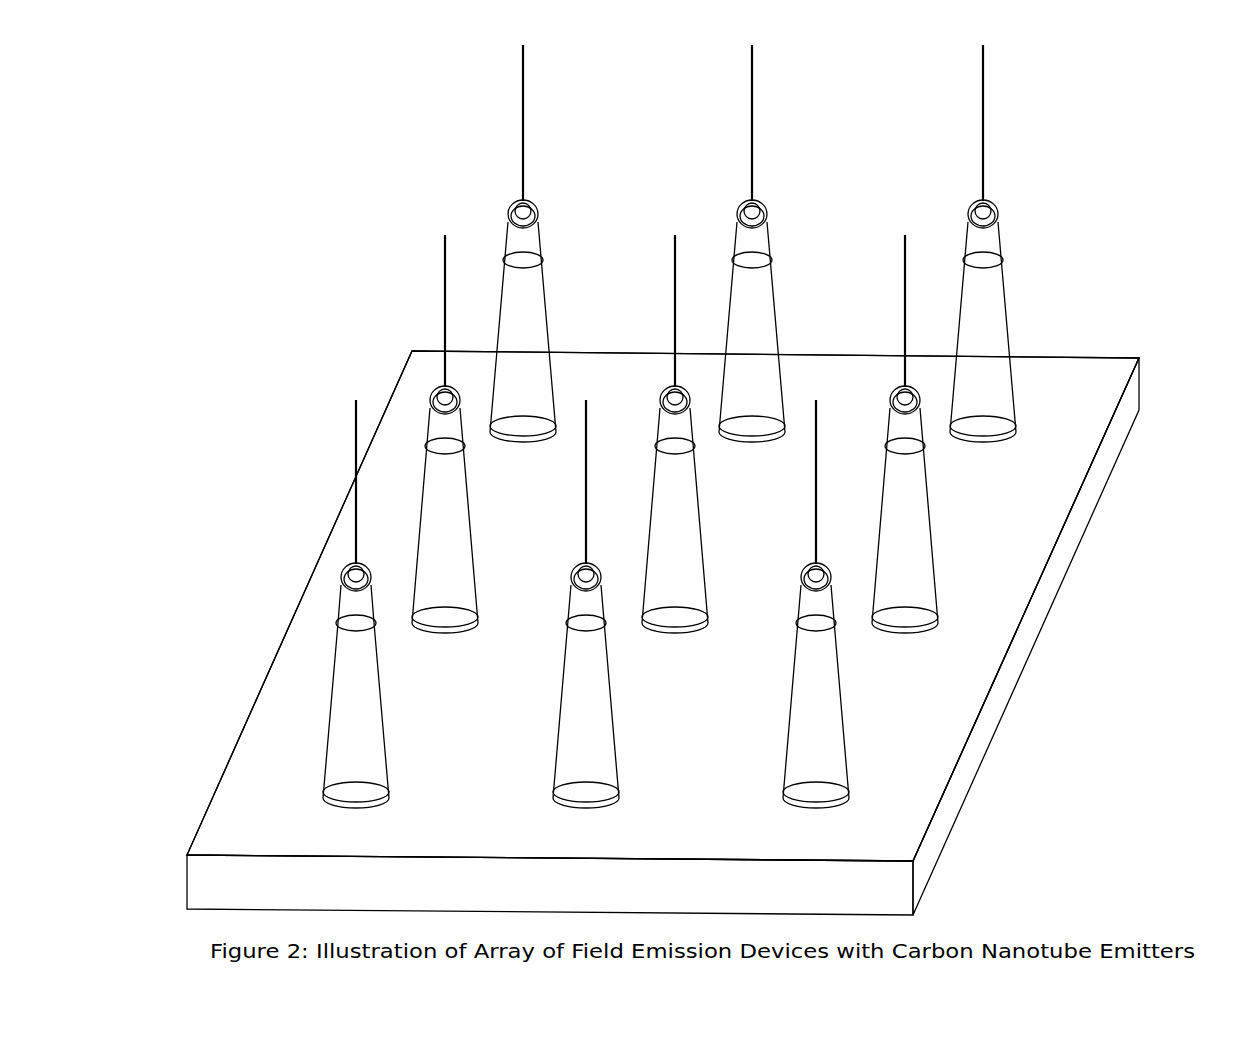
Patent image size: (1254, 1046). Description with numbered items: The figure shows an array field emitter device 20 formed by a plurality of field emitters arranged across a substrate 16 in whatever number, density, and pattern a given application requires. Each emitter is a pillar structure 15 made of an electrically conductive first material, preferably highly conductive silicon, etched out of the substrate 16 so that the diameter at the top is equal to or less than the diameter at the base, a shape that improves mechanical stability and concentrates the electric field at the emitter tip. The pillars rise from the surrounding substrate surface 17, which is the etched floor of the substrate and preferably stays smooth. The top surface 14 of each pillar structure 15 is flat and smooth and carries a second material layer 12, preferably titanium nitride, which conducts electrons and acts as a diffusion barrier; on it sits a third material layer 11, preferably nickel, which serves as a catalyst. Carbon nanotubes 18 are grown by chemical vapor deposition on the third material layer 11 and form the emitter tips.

The third material layer 11 is at (350, 562).
The second material layer 12 is at (344, 567).
The top surface of the pillar structure 14 is at (337, 574).
The pillar structure 15 is at (338, 608).
The substrate 16 is at (268, 868).
The substrate surface 17 is at (925, 696).
The carbon nanotubes 18 is at (358, 402).
The array field emitter device 20 is at (1049, 342).